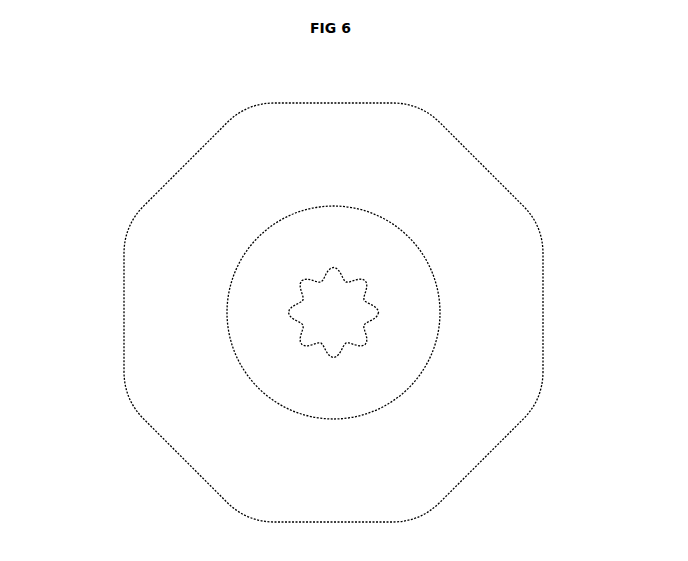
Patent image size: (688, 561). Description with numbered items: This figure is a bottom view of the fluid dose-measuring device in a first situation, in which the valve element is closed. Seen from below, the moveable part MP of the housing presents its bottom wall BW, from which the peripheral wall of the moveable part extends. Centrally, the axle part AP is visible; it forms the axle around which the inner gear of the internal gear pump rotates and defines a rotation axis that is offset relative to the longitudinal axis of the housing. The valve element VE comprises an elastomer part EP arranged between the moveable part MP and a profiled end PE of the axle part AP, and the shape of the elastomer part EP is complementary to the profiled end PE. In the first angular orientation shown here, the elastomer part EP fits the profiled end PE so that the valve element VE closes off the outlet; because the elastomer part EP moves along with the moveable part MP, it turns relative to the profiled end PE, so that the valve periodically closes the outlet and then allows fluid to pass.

The bottom wall BW is at (221, 174).
The moveable part MP is at (340, 312).
The valve element VE is at (435, 312).
The elastomer part EP is at (400, 276).
The axle part AP is at (200, 370).
The profiled end PE is at (312, 331).